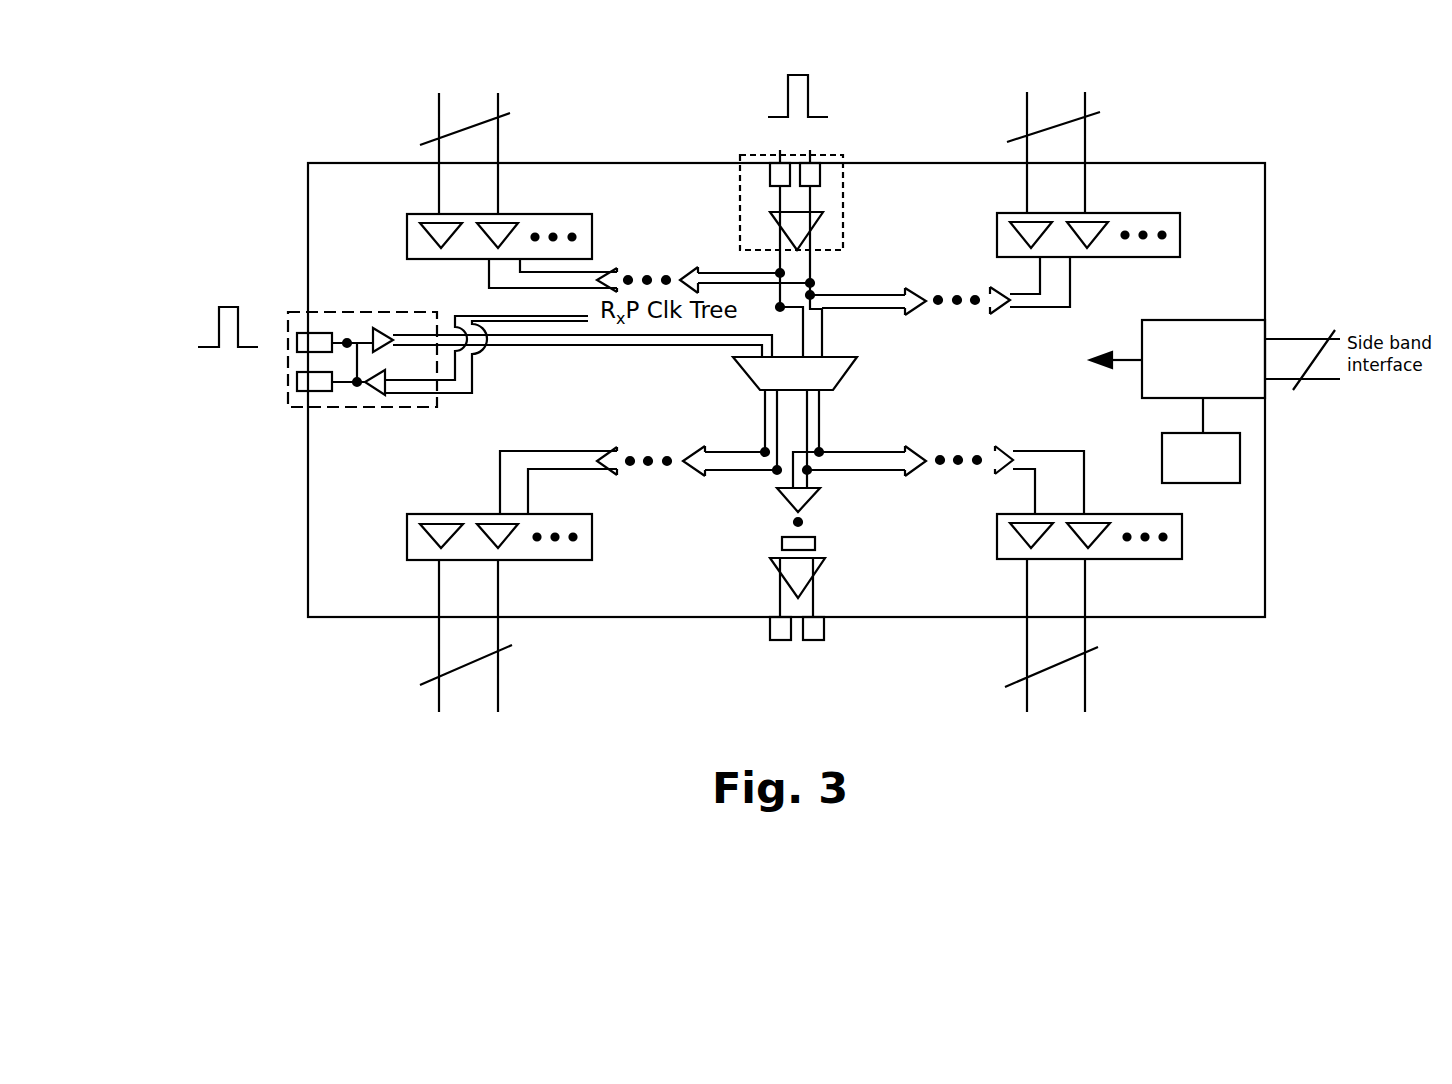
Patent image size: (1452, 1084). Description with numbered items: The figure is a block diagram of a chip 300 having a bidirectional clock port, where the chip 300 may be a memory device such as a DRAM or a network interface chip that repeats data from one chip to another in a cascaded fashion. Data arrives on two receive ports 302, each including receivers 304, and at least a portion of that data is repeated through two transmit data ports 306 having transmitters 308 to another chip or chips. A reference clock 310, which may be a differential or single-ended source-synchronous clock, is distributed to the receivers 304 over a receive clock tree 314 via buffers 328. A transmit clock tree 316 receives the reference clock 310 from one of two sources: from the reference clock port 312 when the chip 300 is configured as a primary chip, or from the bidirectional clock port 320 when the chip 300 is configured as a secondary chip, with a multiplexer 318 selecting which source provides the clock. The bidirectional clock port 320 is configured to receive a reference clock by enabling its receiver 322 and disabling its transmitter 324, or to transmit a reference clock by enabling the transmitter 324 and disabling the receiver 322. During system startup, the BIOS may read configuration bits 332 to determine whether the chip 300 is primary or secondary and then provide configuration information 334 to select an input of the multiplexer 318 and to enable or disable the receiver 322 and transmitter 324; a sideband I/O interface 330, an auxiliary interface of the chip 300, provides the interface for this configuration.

The chip 300 is at (497, 866).
The receive ports 302 is at (407, 240).
The receivers 304 is at (510, 227).
The transmit data ports 306 is at (407, 537).
The transmitters 308 is at (436, 522).
The reference clock 310 is at (798, 73).
The reference clock port 312 is at (753, 155).
The receive clock tree 314 is at (843, 293).
The transmit clock tree 316 is at (725, 447).
The multiplexer 318 is at (847, 370).
The bidirectional clock port 320 is at (288, 405).
The receiver 322 is at (378, 328).
The transmitter 324 is at (372, 396).
The buffers 328 is at (631, 263).
The sideband I/O interface 330 is at (1227, 376).
The configuration bits 332 is at (1201, 440).
The configuration information 334 is at (1089, 361).